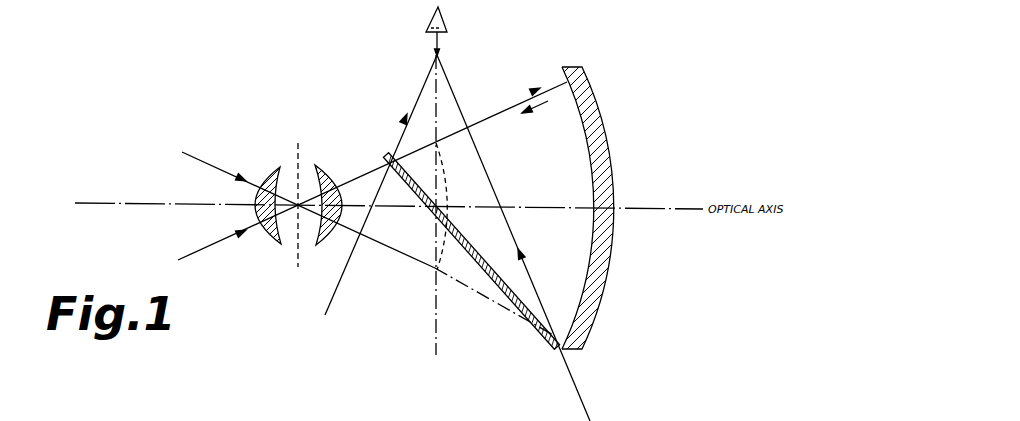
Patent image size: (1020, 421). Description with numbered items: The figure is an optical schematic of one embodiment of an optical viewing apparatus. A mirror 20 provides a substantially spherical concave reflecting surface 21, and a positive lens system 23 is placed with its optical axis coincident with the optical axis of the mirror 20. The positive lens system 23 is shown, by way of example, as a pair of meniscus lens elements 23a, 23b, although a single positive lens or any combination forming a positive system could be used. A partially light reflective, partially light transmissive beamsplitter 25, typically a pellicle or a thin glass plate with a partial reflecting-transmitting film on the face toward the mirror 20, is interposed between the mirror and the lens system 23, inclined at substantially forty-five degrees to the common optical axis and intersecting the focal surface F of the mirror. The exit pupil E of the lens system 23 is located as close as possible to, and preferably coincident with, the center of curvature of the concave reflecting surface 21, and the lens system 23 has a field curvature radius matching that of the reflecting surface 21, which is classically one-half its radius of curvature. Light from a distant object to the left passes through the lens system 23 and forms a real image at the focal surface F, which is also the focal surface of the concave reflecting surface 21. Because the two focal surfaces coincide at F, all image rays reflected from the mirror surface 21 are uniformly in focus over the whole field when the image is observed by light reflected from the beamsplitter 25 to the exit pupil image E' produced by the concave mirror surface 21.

The mirror 20 is at (603, 127).
The concave reflecting surface 21 is at (586, 138).
The positive lens system 23 is at (291, 160).
The meniscus lens element 23a is at (270, 243).
The meniscus lens element 23b is at (321, 247).
The beamsplitter 25 is at (484, 270).
The exit pupil E is at (313, 200).
The exit pupil image E' is at (451, 31).
The focal surface F is at (446, 190).